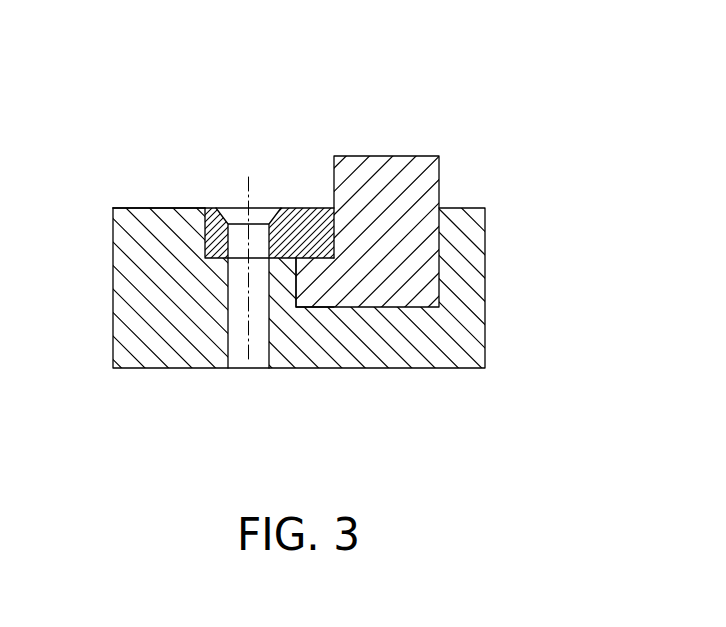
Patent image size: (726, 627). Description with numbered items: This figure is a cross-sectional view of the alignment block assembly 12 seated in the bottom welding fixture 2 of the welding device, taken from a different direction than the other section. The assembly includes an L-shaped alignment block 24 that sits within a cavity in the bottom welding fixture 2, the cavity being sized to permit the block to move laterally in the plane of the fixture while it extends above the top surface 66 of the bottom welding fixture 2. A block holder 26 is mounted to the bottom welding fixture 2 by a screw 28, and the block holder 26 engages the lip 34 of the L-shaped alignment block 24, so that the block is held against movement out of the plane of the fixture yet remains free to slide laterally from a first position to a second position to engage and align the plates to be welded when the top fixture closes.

The bottom welding fixture 2 is at (143, 287).
The alignment block assembly 12 is at (456, 108).
The L-shaped alignment block 24 is at (392, 188).
The block holder 26 is at (299, 222).
The screw 28 is at (255, 342).
The lip 34 is at (315, 282).
The top surface 66 is at (149, 207).